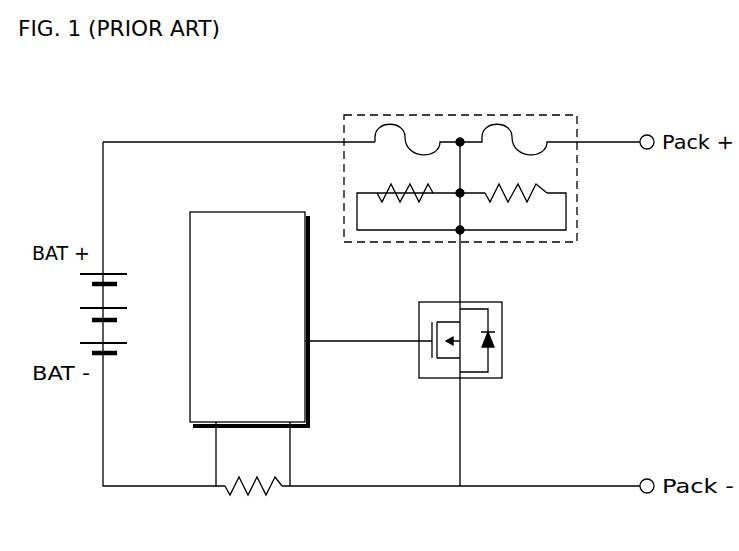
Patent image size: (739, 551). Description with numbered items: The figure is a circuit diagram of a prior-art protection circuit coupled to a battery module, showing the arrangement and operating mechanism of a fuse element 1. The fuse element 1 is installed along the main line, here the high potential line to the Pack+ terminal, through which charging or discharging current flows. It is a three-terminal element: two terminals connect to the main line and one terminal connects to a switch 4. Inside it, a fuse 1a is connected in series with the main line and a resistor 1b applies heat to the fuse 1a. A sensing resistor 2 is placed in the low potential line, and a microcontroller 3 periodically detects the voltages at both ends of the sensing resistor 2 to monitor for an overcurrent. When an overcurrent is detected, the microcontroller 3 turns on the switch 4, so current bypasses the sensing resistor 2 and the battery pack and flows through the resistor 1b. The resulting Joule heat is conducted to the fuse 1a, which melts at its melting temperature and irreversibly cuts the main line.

The fuse element 1 is at (546, 115).
The fuse 1a is at (390, 126).
The resistor 1b is at (400, 201).
The sensing resistor 2 is at (253, 496).
The microcontroller 3 is at (248, 212).
The switch 4 is at (502, 341).